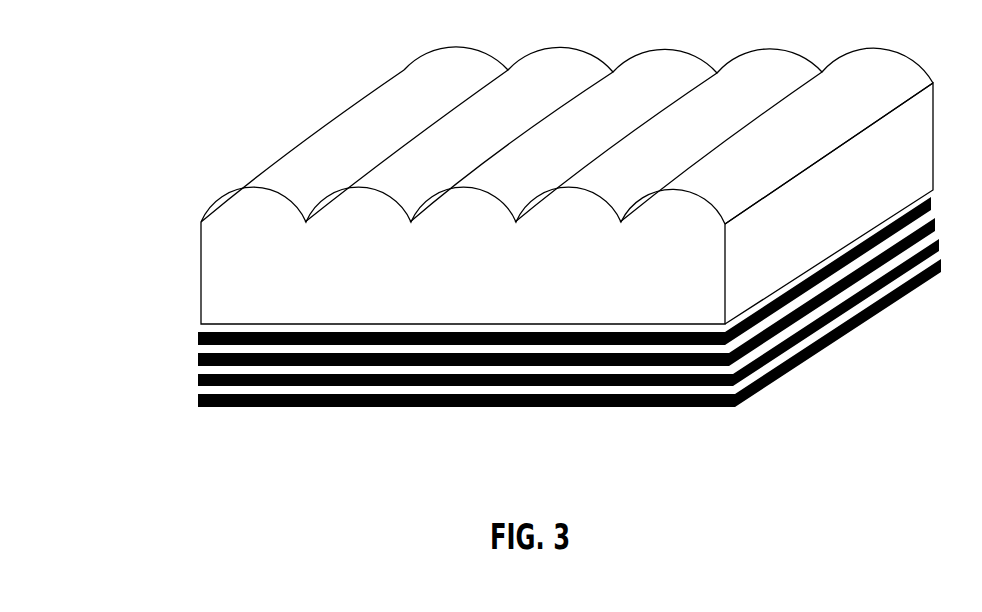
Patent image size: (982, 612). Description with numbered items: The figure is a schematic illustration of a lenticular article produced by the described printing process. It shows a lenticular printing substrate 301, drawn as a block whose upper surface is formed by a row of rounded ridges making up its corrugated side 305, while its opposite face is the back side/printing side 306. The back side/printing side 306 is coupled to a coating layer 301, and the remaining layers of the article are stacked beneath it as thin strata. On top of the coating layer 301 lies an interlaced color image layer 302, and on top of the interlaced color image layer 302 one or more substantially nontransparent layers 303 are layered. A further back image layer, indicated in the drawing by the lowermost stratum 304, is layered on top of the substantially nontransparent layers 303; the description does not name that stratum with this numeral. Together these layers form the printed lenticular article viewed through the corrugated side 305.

The lenticular printing substrate 301 is at (520, 192).
The interlaced color image layer 302 is at (195, 362).
The substantially nontransparent layers 303 is at (195, 385).
The fourth layer 304 is at (195, 409).
The corrugated side 305 is at (352, 130).
The back side/printing side 306 is at (787, 294).